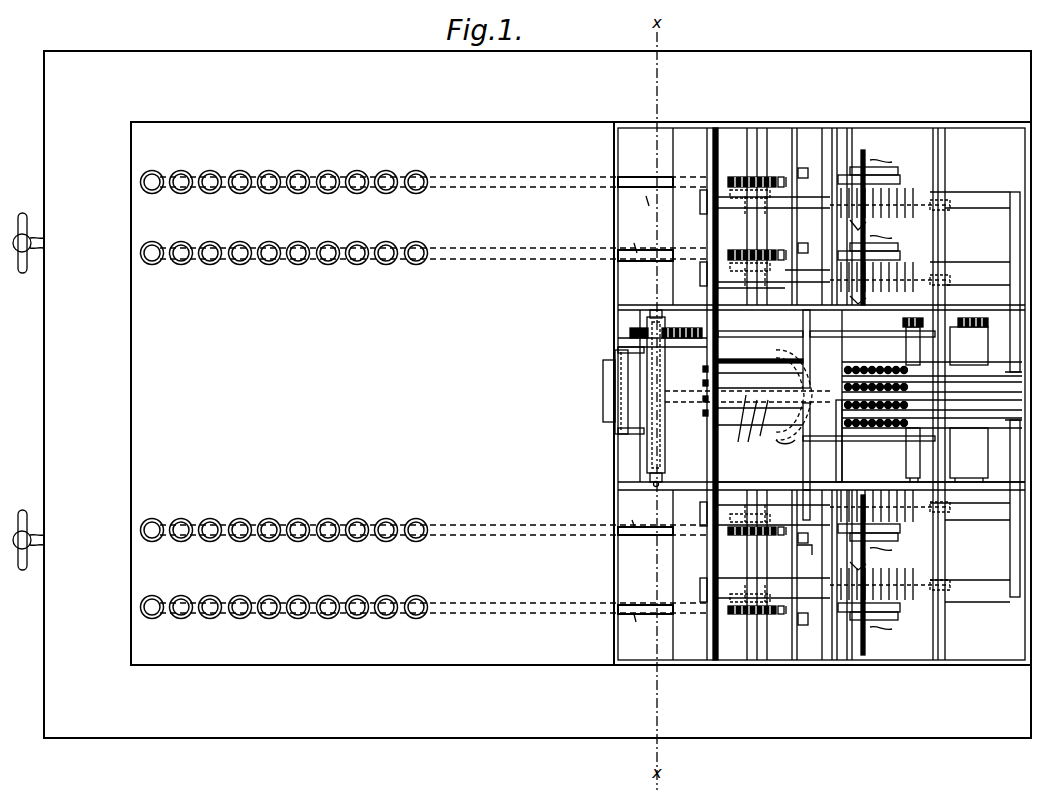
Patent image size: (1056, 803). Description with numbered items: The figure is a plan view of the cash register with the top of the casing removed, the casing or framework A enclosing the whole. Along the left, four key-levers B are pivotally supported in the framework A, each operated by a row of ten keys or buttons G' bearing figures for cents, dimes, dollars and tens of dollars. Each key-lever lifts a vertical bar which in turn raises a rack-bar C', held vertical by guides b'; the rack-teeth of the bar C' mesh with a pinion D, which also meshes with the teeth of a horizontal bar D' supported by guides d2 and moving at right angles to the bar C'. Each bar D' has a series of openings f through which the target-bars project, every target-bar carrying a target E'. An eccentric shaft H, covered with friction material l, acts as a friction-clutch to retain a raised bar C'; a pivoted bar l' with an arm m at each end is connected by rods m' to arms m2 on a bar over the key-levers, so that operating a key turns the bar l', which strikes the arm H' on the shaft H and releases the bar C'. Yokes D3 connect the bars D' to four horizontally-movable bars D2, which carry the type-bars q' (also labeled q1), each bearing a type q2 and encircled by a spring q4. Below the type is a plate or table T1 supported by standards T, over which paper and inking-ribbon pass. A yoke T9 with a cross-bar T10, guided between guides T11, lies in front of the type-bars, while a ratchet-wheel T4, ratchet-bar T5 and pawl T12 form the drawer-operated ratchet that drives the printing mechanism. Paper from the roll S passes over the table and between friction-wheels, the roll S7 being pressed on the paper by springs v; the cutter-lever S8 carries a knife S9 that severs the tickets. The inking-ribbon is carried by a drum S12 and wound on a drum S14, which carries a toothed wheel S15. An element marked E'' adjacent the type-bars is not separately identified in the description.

The casing or framework A is at (822, 400).
The keys or buttons G' is at (424, 395).
The key-levers B is at (645, 394).
The pinions D is at (750, 397).
The vertically-movable bars C' is at (778, 397).
The guides b' is at (779, 395).
The arm H' is at (811, 394).
The eccentric shaft H is at (820, 379).
The horizontal bars D' is at (774, 397).
The bar l' is at (856, 394).
The arms m is at (877, 392).
The rods m' is at (906, 395).
The arms m2 is at (905, 530).
The openings or perforations f is at (920, 205).
The target E' is at (914, 410).
The guides d2 is at (930, 240).
The yokes D3 is at (1010, 230).
The springs v is at (660, 312).
The pawl T12 is at (628, 333).
The ratchet-wheel T4 is at (690, 345).
The cutter or knife S9 is at (618, 350).
The cutter-lever S8 is at (621, 432).
The friction-wheel S7 is at (665, 458).
The roll of paper S is at (747, 395).
The ratchet-bar T5 is at (735, 340).
The guides T11 is at (833, 474).
The horizontally-movable bars D2 is at (728, 366).
The yoke T9 is at (789, 393).
The standards T is at (758, 468).
The cross-bar T10 is at (842, 450).
The plate or table T1 is at (888, 448).
The plate E'' is at (932, 396).
The type q2 is at (860, 368).
The springs q4 is at (880, 368).
The type-bars q' is at (882, 393).
The type-bars q1 is at (870, 428).
The toothed wheel S15 is at (984, 327).
The drum S12 is at (955, 353).
The drum S14 is at (947, 455).
The friction covering l is at (807, 529).